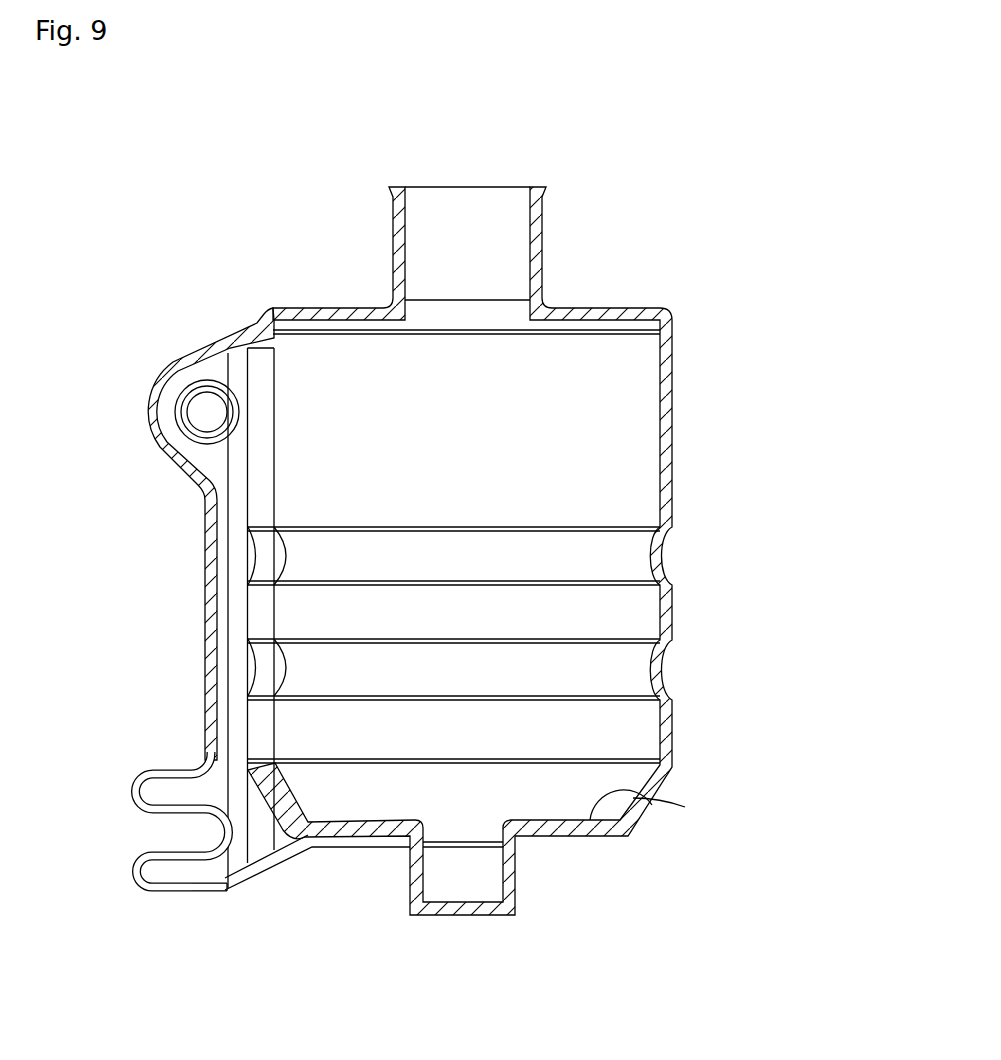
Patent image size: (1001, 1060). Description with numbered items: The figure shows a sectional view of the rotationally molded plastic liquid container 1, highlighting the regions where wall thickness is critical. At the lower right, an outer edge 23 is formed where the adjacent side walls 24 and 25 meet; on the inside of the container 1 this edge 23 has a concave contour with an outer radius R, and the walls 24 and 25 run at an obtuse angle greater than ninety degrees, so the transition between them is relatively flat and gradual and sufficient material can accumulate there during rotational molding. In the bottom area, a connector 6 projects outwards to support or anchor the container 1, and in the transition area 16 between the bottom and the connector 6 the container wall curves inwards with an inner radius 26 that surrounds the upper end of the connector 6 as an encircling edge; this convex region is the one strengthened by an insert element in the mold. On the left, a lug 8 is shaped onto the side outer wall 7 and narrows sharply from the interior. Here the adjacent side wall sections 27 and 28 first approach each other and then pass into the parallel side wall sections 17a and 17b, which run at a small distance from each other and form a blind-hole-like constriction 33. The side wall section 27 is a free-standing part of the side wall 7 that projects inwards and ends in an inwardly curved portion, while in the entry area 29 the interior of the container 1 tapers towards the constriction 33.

The liquid container 1 is at (604, 264).
The side outer wall 7 is at (225, 837).
The side wall section 27 is at (226, 837).
The parallel side wall section 17b is at (158, 855).
The lug 8 is at (133, 880).
The parallel side wall section 17a is at (157, 893).
The constriction 33 is at (212, 872).
The entry area 29 is at (237, 860).
The side wall section 28 is at (255, 875).
The transition area 16 is at (399, 863).
The connector 6 is at (470, 907).
The inner radius 26 is at (424, 826).
The side wall 25 is at (562, 830).
The side wall 24 is at (657, 778).
The outer edge 23 is at (625, 833).
The outer radius R is at (620, 818).